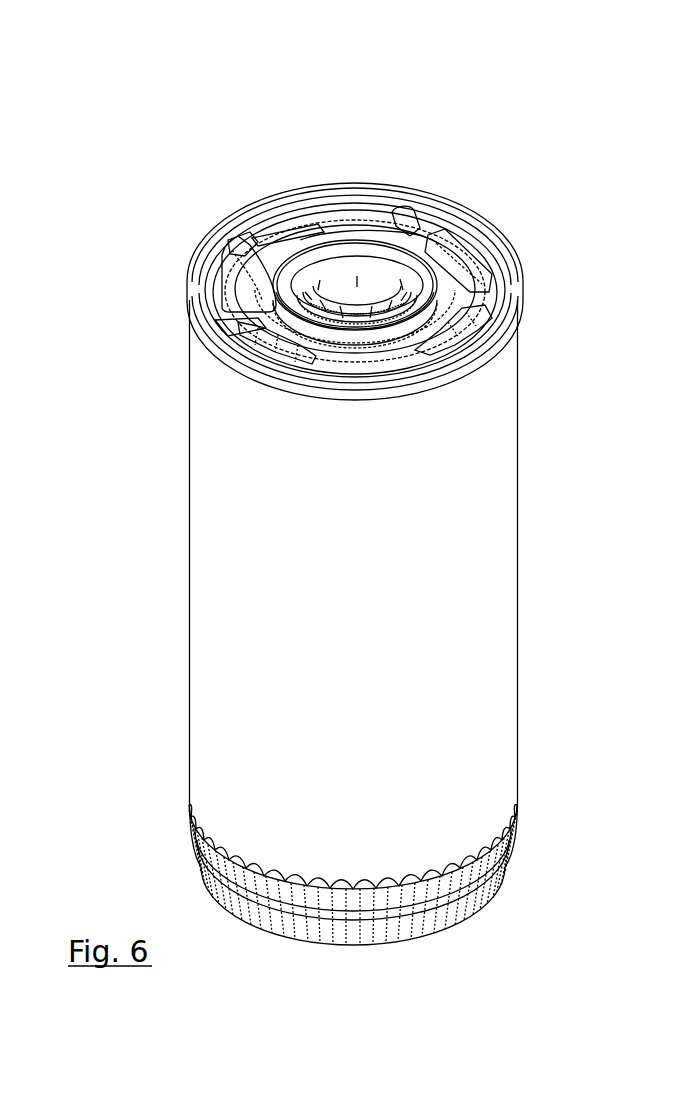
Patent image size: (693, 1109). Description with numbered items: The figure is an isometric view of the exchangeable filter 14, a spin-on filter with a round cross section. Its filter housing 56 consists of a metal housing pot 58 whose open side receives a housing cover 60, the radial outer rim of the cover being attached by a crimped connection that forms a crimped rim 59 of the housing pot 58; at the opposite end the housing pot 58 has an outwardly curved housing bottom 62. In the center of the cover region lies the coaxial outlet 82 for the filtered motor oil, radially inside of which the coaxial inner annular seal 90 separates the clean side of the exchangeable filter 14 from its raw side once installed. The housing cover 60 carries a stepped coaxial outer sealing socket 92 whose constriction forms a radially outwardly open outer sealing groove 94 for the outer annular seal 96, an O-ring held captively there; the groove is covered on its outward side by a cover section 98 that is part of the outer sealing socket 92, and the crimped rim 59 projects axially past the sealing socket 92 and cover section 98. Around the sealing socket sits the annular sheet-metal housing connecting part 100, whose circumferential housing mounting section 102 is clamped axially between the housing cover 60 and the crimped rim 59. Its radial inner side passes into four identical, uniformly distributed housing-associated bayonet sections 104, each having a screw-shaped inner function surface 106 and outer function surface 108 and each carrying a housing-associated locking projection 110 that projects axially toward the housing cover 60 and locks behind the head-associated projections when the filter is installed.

The exchangeable filter 14 is at (170, 173).
The filter housing 56 is at (217, 747).
The housing pot 58 is at (216, 712).
The crimped rim 59 is at (520, 283).
The housing cover 60 is at (243, 300).
The housing bottom 62 is at (203, 879).
The coaxial outlet 82 is at (370, 310).
The inner annular seal 90 is at (377, 313).
The outer sealing socket 92 is at (413, 332).
The outer sealing groove 94 is at (365, 337).
The outer annular seal 96 is at (340, 330).
The cover section 98 is at (352, 243).
The housing connecting part 100 is at (247, 337).
The housing mounting section 102 is at (232, 325).
The housing-associated bayonet sections 104 is at (458, 243).
The inner function surface 106 is at (293, 248).
The outer function surface 108 is at (268, 238).
The housing-associated locking projection 110 is at (418, 217).